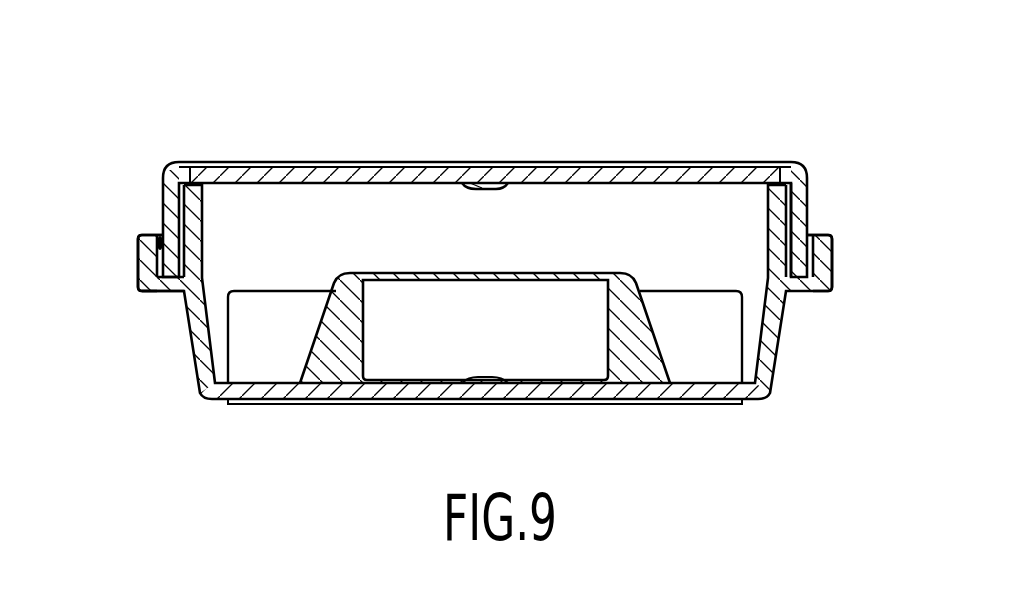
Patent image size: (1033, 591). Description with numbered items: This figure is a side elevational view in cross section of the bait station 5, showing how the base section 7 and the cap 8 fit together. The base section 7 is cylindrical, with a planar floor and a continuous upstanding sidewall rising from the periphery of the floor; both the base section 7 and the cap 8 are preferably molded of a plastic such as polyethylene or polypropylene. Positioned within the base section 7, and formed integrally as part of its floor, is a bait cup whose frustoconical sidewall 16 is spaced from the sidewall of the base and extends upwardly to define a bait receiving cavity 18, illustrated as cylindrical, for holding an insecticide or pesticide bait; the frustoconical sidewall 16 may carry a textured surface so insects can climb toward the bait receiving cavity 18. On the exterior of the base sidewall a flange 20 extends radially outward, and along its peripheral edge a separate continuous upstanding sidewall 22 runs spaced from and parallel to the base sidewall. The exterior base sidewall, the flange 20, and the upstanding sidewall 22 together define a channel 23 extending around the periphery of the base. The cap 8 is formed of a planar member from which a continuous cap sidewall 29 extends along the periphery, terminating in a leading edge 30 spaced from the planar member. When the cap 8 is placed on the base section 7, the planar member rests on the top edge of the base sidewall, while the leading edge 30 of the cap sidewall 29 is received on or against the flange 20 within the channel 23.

The bait station 5 is at (277, 118).
The base section 7 is at (250, 427).
The cap 8 is at (755, 120).
The frustoconical sidewall 16 is at (648, 297).
The bait receiving cavity 18 is at (502, 343).
The flange 20 is at (165, 292).
The upstanding sidewall 22 is at (138, 250).
The channel 23 is at (159, 244).
The cap sidewall 29 is at (803, 213).
The leading edge 30 is at (793, 292).